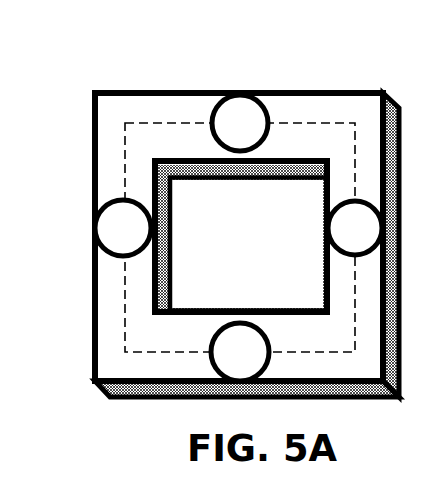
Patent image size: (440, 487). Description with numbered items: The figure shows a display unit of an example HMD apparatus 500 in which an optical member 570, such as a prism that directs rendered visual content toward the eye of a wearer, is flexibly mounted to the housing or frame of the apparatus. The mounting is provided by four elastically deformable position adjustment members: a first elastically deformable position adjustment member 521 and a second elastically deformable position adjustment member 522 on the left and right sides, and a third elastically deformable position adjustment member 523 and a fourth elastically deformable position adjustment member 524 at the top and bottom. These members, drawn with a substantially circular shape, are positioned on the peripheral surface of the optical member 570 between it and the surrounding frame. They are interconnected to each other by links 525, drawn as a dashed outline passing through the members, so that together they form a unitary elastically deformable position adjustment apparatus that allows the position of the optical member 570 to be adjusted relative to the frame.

The HMD apparatus 500 is at (224, 210).
The optical member 570 is at (293, 92).
The first elastically deformable position adjustment member 521 is at (102, 239).
The second elastically deformable position adjustment member 522 is at (334, 239).
The third elastically deformable position adjustment member 523 is at (219, 134).
The fourth elastically deformable position adjustment member 524 is at (219, 363).
The links 525 is at (127, 313).